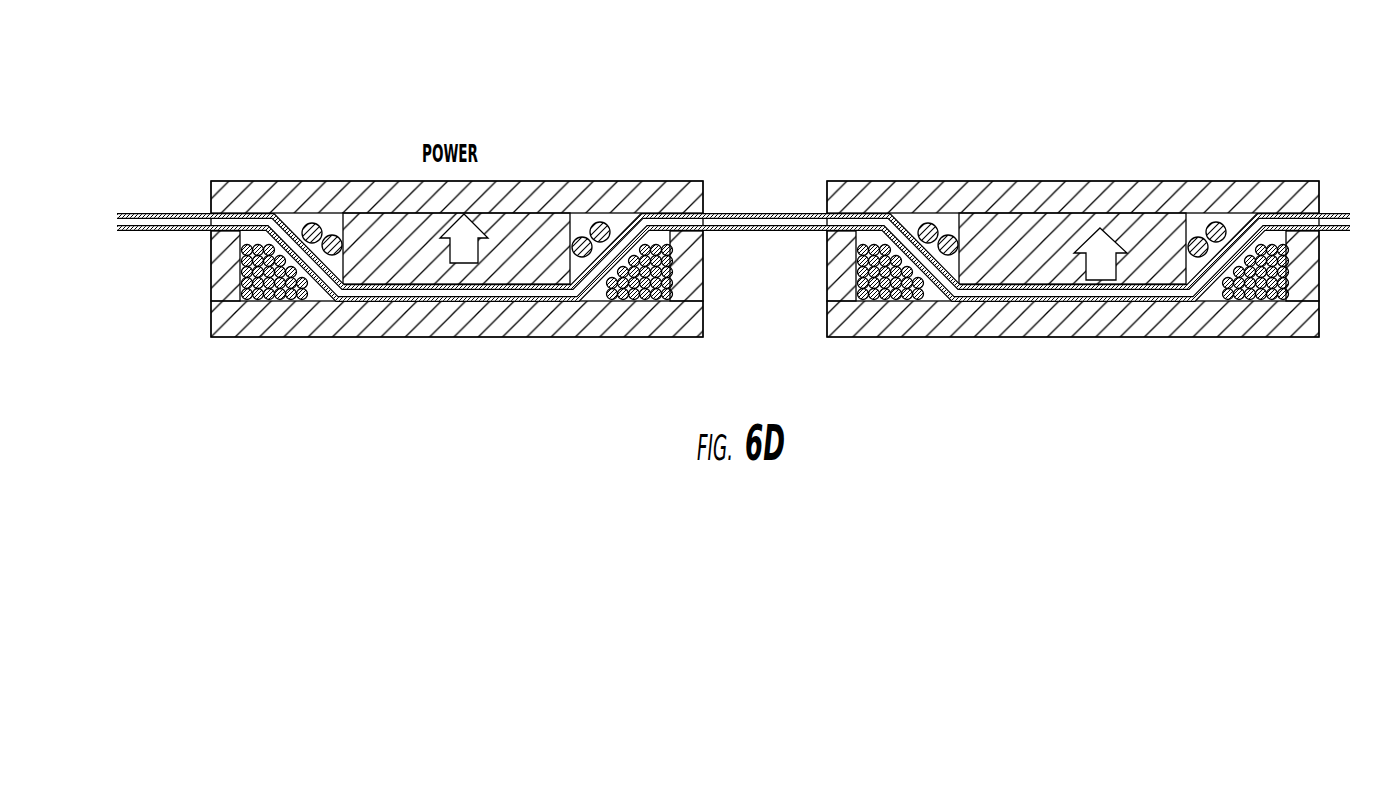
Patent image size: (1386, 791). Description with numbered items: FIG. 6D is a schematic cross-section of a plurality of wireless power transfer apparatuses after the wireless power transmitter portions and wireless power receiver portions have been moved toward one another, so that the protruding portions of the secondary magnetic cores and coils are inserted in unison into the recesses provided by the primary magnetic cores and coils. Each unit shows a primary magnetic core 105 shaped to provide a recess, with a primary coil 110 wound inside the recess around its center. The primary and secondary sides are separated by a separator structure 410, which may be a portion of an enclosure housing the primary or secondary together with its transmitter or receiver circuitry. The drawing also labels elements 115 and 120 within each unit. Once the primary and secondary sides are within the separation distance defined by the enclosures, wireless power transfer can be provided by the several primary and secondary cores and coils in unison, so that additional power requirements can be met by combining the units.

The housing upper portion 115 is at (539, 179).
The primary magnetic core 105 is at (318, 337).
The primary coil 110 is at (275, 286).
The conductive members 120 is at (335, 231).
The first separator structure 410 is at (740, 211).